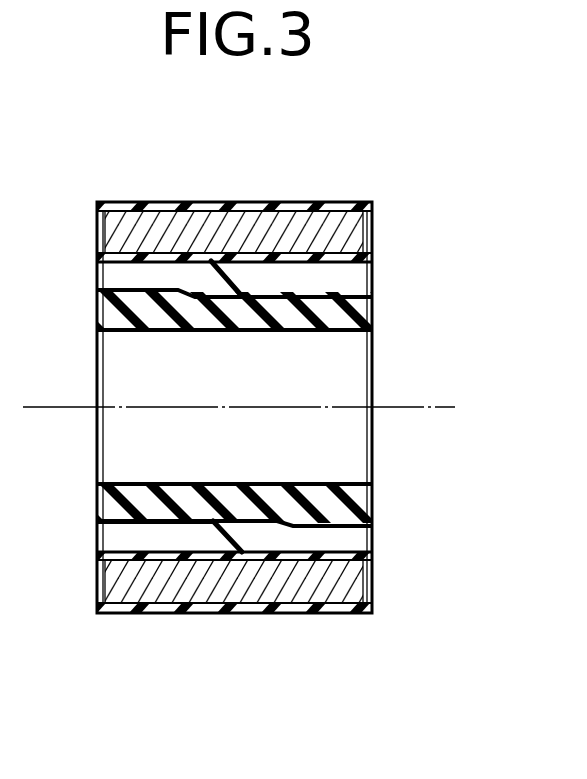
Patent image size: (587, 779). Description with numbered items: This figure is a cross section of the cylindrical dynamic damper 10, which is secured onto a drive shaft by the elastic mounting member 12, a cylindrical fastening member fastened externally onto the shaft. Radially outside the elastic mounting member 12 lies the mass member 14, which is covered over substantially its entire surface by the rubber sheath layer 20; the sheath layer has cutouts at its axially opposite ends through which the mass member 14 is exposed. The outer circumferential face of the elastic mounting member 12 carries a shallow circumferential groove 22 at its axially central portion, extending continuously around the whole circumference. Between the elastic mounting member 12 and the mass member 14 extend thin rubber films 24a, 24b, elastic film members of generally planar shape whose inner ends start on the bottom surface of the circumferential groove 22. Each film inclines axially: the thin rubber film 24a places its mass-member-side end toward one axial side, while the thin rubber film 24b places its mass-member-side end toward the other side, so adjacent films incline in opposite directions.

The dynamic damper 10 is at (422, 152).
The elastic mounting member 12 is at (360, 503).
The mass member 14 is at (270, 226).
The rubber sheath layer 20 is at (287, 607).
The circumferential groove 22 is at (203, 523).
The thin rubber film 24a is at (229, 263).
The thin rubber film 24b is at (243, 524).